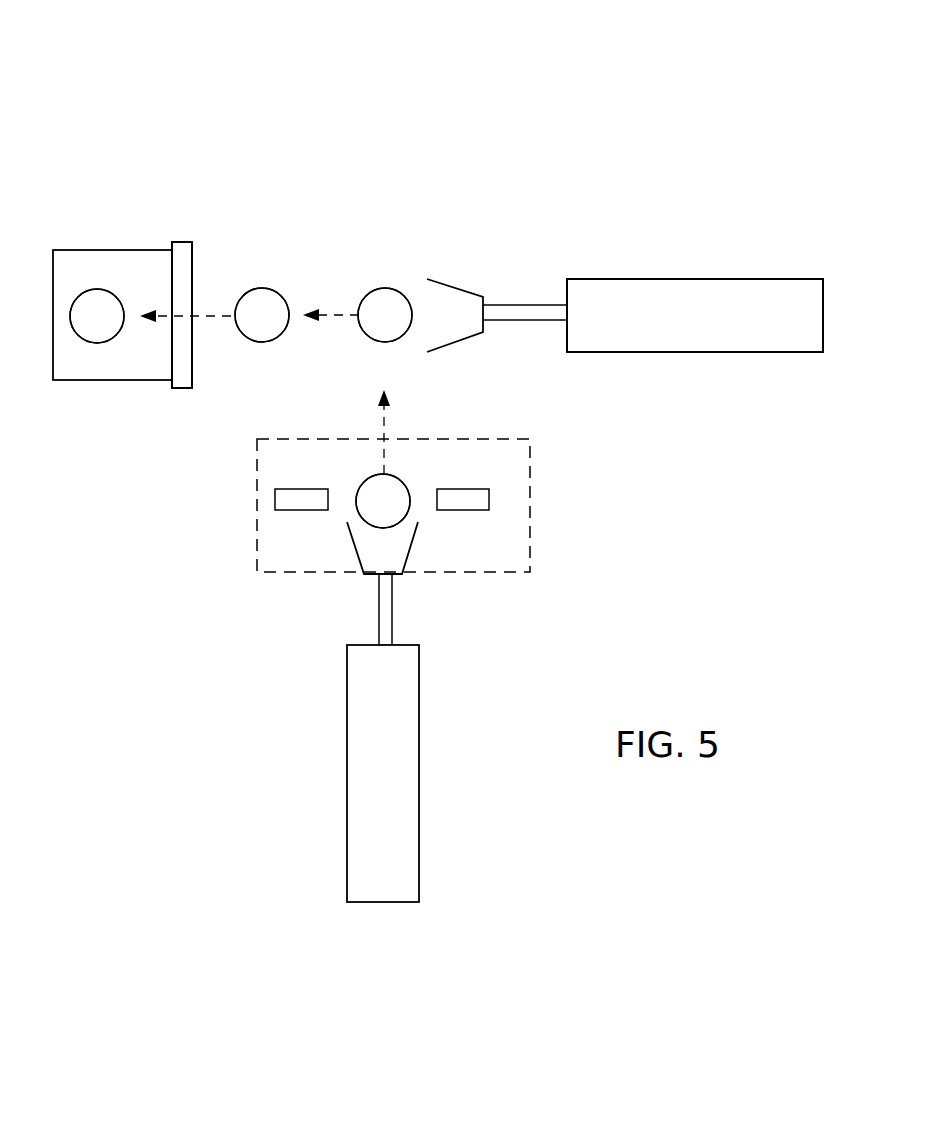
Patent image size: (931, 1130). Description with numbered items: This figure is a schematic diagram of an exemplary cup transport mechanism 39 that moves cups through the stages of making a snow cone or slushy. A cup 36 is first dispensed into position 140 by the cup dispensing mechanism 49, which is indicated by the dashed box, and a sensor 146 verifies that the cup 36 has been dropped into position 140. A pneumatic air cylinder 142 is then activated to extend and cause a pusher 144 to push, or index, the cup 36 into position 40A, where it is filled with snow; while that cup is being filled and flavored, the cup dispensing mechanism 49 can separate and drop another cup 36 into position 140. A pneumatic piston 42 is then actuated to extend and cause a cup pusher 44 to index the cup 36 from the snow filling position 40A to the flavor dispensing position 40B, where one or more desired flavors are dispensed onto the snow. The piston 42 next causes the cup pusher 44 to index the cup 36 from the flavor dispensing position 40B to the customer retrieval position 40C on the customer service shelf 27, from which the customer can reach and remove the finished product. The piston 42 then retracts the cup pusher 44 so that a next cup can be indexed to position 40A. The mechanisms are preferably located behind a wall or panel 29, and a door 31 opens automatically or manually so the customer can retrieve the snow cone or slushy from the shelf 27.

The customer service shelf 27 is at (91, 376).
The wall or panel 29 is at (171, 406).
The door 31 is at (182, 315).
The cup 36 is at (112, 329).
The cup transport mechanism 39 is at (358, 102).
The snow filling position 40A is at (393, 263).
The flavor dispensing position 40B is at (253, 263).
The customer retrieval position 40C is at (86, 265).
The pneumatic piston 42 is at (686, 325).
The cup pusher 44 is at (461, 267).
The cup dispensing mechanism 49 is at (553, 470).
The position 140 is at (336, 470).
The pneumatic air cylinder 142 is at (405, 707).
The pusher 144 is at (436, 525).
The sensor 146 is at (255, 506).